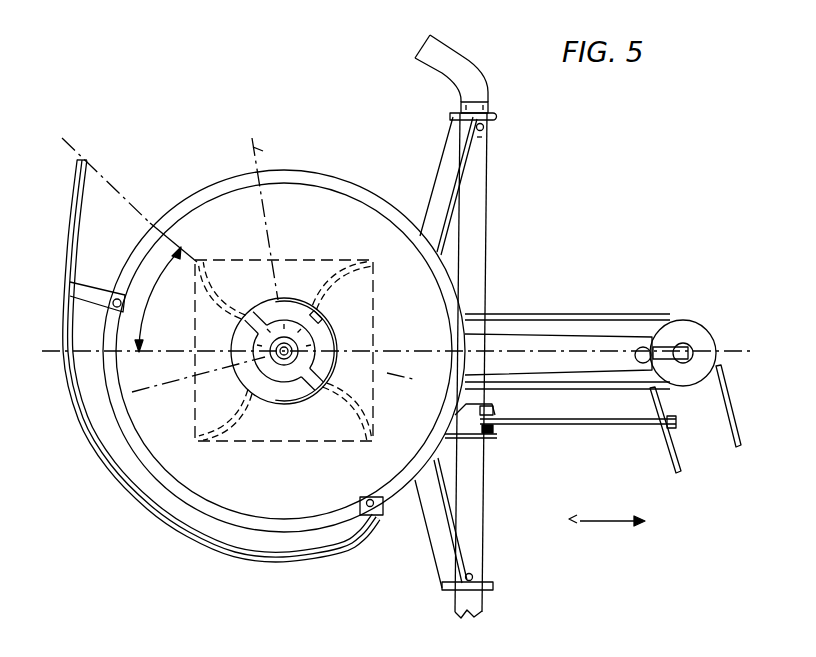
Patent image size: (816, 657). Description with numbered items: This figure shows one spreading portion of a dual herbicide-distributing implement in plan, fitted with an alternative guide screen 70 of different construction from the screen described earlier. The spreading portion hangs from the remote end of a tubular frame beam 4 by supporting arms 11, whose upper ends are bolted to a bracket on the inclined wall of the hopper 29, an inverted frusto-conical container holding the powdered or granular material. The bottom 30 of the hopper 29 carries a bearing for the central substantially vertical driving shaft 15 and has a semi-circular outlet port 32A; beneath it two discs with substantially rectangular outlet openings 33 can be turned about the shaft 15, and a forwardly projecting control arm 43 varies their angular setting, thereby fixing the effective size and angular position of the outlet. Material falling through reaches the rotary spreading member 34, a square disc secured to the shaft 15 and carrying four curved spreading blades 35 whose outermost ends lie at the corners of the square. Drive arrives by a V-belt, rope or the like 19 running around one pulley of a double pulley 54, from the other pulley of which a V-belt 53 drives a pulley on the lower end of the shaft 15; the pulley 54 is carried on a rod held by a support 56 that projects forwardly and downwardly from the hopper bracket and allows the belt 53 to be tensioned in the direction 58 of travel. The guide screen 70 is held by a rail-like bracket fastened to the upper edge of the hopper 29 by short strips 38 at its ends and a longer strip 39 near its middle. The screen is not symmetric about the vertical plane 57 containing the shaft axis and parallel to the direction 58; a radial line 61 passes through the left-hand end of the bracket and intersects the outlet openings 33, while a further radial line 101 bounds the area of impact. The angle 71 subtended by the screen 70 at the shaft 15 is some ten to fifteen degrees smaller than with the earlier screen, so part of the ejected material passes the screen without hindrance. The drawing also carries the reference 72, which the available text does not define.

The frame beam 4 is at (485, 607).
The supporting arms 11 is at (449, 120).
The driving shaft 15 is at (290, 362).
The V-belt, rope or the like 19 is at (681, 464).
The hopper 29 is at (231, 196).
The bottom of the hopper 30 is at (284, 404).
The semi-circular outlet port 32A is at (336, 346).
The outlet openings 33 is at (322, 317).
The rotary spreading member 34 is at (320, 442).
The curved spreading blades 35 is at (213, 442).
The short strips 38 is at (380, 506).
The longer strip 39 is at (98, 292).
The control arm 43 is at (592, 428).
The V-belt, rope or the like 53 is at (656, 320).
The double pulley 54 is at (696, 330).
The support 56 is at (592, 340).
The vertical plane 57 is at (523, 351).
The direction 58 is at (607, 516).
The radial line 61 is at (440, 105).
The guide screen 70 is at (190, 537).
The angle 71 is at (145, 314).
The reference line 72 is at (269, 218).
The radial line 101 is at (178, 386).